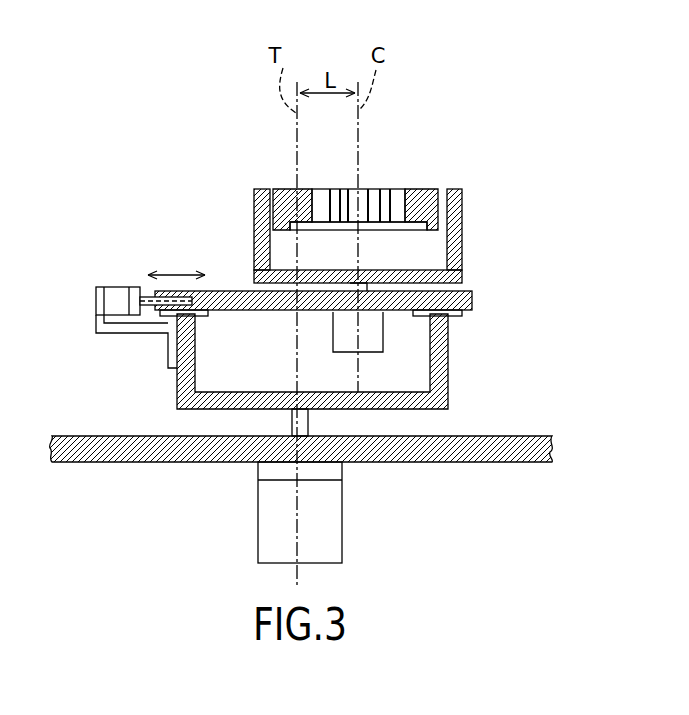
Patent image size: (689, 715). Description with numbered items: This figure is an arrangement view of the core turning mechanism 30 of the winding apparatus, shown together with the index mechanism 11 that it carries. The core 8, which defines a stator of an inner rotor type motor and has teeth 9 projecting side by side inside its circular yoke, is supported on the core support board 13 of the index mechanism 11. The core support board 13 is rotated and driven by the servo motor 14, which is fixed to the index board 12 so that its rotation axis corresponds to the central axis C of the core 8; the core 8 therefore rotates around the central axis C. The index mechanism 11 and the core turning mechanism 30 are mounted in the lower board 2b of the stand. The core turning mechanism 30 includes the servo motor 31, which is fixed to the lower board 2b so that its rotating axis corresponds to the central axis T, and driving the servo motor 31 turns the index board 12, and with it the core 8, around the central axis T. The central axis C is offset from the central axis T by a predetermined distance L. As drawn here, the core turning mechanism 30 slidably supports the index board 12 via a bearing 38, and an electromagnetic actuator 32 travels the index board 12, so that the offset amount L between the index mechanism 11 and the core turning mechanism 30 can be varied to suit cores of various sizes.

The index mechanism 11 is at (393, 199).
The core support board 13 is at (462, 232).
The core 8 is at (283, 188).
The teeth 9 is at (298, 188).
The index board 12 is at (472, 300).
The bearing 38 is at (462, 316).
The core turning mechanism 30 is at (472, 416).
The servo motor 14 is at (380, 336).
The electromagnetic actuator 32 is at (117, 287).
The lower board 2b is at (481, 462).
The servo motor 31 is at (342, 520).